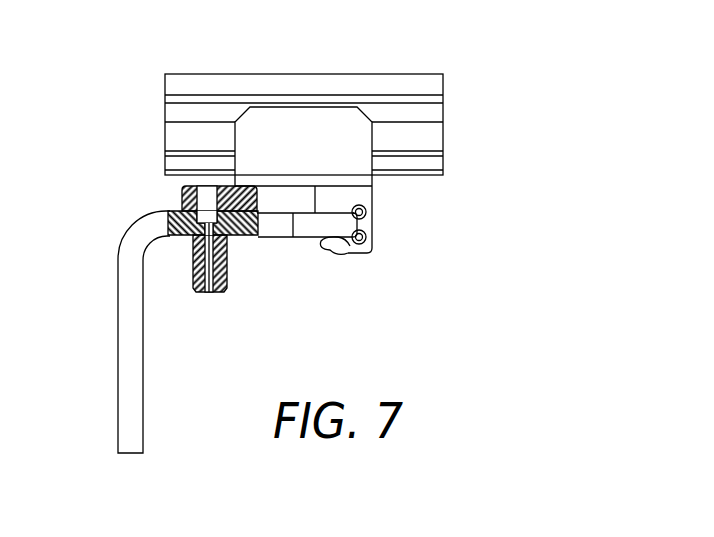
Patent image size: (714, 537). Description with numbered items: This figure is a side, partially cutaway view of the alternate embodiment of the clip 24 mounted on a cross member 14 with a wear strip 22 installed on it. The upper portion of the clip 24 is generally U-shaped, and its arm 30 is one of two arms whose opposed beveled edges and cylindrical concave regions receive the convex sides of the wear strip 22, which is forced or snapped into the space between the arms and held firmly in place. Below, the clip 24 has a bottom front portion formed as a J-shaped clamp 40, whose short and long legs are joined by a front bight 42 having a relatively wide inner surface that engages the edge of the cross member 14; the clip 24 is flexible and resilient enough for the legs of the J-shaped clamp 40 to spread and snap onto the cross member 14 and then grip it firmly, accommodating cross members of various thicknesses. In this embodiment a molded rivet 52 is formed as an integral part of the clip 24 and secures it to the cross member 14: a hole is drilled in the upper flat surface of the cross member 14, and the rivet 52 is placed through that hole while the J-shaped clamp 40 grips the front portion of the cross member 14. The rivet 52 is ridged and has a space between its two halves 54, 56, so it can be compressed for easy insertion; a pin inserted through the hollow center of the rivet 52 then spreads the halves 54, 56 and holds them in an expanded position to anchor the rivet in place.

The cross member 14 is at (128, 348).
The wear strip 22 is at (422, 90).
The clip 24 is at (400, 196).
The arm of the clip 30 is at (247, 136).
The J-shaped clamp 40 is at (358, 262).
The front bight 42 is at (374, 228).
The molded rivet 52 is at (232, 269).
The rivet half 54 is at (223, 292).
The rivet half 56 is at (195, 291).